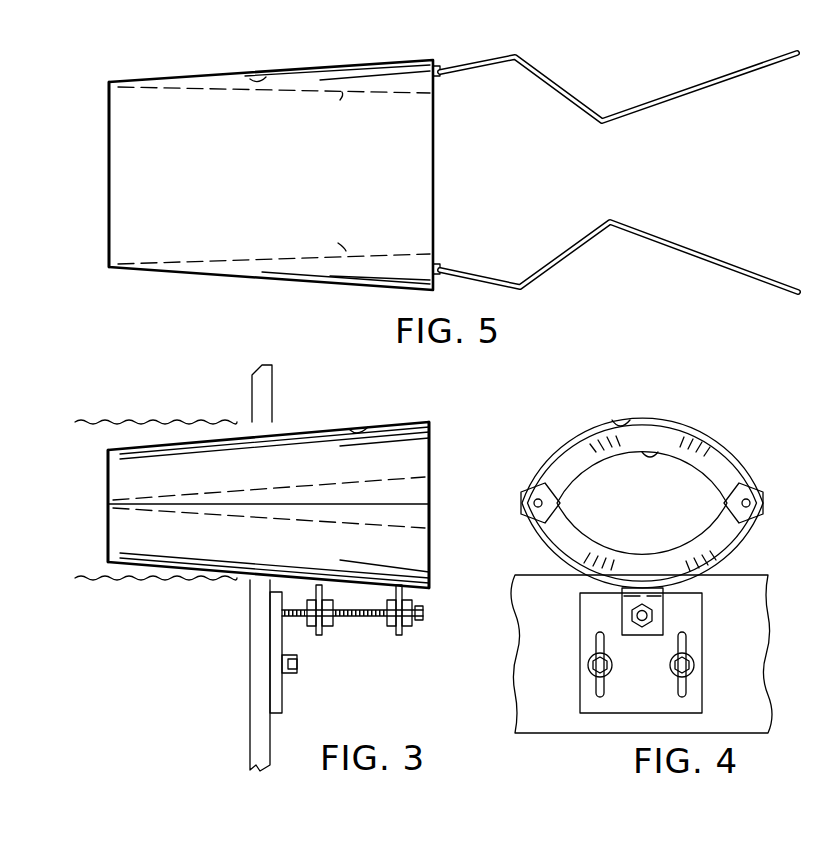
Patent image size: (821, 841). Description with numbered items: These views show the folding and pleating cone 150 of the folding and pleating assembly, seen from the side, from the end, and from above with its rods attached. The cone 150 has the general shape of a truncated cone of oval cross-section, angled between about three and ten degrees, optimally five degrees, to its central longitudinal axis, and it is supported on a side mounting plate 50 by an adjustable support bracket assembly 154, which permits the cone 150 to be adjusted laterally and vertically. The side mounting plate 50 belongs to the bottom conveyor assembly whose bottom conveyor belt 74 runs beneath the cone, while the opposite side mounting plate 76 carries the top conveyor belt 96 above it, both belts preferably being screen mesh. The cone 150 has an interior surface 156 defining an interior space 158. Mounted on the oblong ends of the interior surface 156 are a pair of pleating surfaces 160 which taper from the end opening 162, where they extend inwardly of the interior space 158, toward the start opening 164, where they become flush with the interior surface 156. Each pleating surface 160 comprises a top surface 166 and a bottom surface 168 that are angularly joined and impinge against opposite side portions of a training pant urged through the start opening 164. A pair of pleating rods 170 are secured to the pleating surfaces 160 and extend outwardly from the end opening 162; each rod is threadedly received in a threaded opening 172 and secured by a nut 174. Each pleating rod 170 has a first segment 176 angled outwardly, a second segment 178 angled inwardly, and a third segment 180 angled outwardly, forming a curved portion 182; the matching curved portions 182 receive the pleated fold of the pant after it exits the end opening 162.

In FIG. 3, the side mounting plate 50 is at (258, 677).
In FIG. 3, the bottom conveyor belt 74 is at (105, 582).
In FIG. 3, the side mounting plate 76 is at (275, 392).
In FIG. 3, the top conveyor belt 96 is at (107, 422).
In FIG. 5, the folding and pleating cone 150 is at (162, 100).
In FIG. 3, the folding and pleating cone 150 is at (108, 452).
In FIG. 4, the folding and pleating cone 150 is at (678, 425).
In FIG. 3, the adjustable support bracket assembly 154 is at (328, 652).
In FIG. 4, the adjustable support bracket assembly 154 is at (552, 675).
In FIG. 5, the interior surface 156 is at (243, 78).
In FIG. 3, the interior surface 156 is at (369, 430).
In FIG. 4, the interior surface 156 is at (718, 468).
In FIG. 5, the interior space 158 is at (398, 182).
In FIG. 3, the interior space 158 is at (400, 467).
In FIG. 4, the interior space 158 is at (660, 513).
In FIG. 5, the pleating surface 160 is at (340, 96).
In FIG. 3, the pleating surface 160 is at (404, 494).
In FIG. 4, the pleating surface 160 is at (528, 492).
In FIG. 5, the end opening 162 is at (438, 134).
In FIG. 3, the end opening 162 is at (432, 432).
In FIG. 4, the end opening 162 is at (614, 420).
In FIG. 5, the start opening 164 is at (108, 232).
In FIG. 3, the start opening 164 is at (108, 524).
In FIG. 4, the start opening 164 is at (648, 452).
In FIG. 3, the top surface 166 is at (310, 488).
In FIG. 4, the top surface 166 is at (563, 493).
In FIG. 3, the bottom surface 168 is at (285, 520).
In FIG. 4, the bottom surface 168 is at (563, 513).
In FIG. 5, the pleating rod 170 is at (572, 58).
In FIG. 4, the threaded opening 172 is at (535, 508).
In FIG. 5, the nut 174 is at (436, 66).
In FIG. 5, the first segment 176 is at (480, 62).
In FIG. 5, the second segment 178 is at (560, 98).
In FIG. 5, the third segment 180 is at (695, 85).
In FIG. 5, the curved portion 182 is at (622, 88).